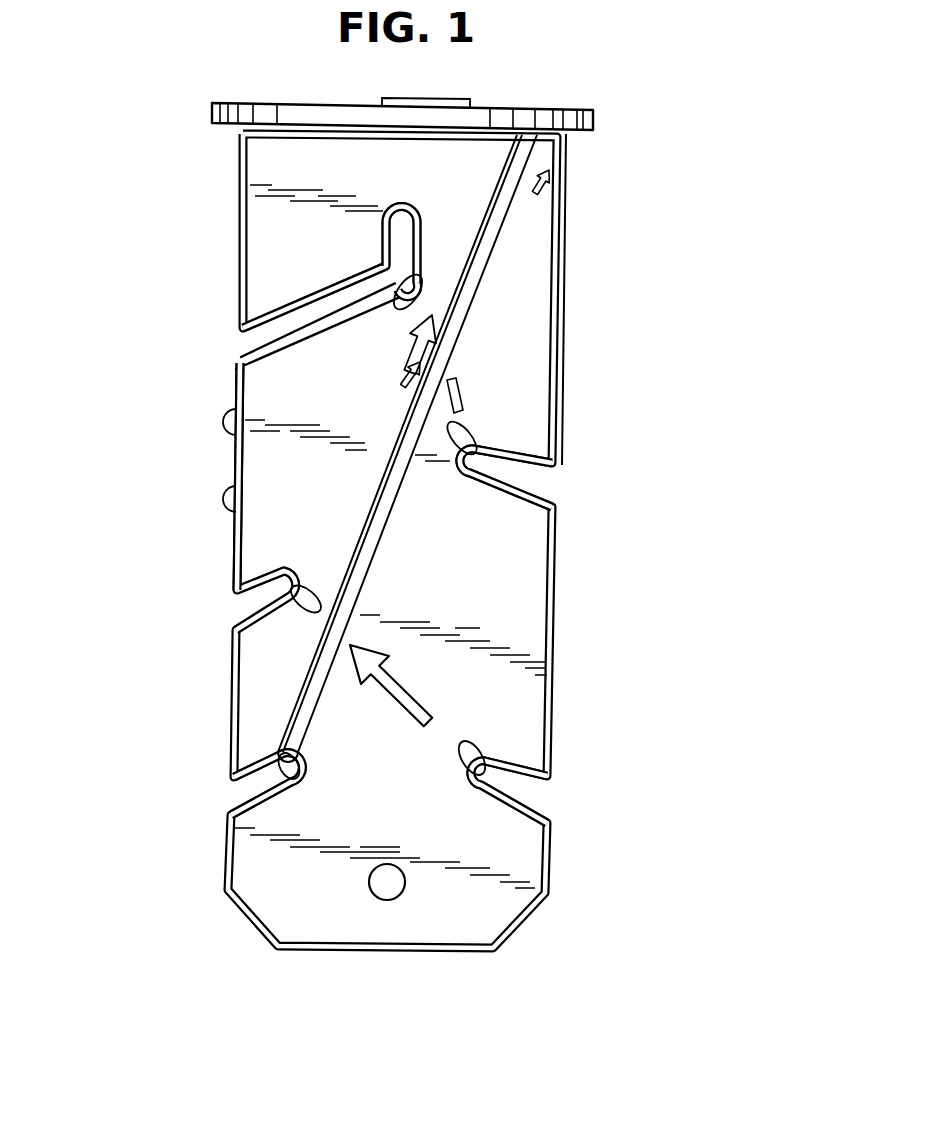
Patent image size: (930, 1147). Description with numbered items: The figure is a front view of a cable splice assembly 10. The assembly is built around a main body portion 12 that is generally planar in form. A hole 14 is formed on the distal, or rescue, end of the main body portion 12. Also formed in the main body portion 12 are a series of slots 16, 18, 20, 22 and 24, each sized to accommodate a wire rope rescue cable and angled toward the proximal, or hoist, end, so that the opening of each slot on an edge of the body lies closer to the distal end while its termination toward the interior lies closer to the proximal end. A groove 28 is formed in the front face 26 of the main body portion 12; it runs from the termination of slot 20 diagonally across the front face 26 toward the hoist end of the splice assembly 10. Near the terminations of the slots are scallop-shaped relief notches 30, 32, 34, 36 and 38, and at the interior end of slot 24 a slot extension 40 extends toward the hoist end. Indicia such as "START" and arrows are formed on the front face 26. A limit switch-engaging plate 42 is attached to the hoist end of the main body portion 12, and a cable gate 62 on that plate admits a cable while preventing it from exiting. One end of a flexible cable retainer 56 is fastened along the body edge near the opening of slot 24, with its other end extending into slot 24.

The cable splice assembly 10 is at (328, 529).
The main body portion 12 is at (230, 553).
The hole 14 is at (383, 902).
The slot 16 is at (533, 490).
The slot 18 is at (520, 806).
The slot 20 is at (250, 804).
The slot 22 is at (245, 608).
The slot 24 is at (250, 338).
The front face 26 is at (268, 253).
The groove 28 is at (450, 345).
The scallop-shaped relief notch 30 is at (477, 430).
The scallop-shaped relief notch 32 is at (477, 757).
The scallop-shaped relief notch 34 is at (288, 752).
The scallop-shaped relief notch 36 is at (310, 587).
The scallop-shaped relief notch 38 is at (424, 290).
The slot extension 40 is at (382, 222).
The limit switch-engaging plate 42 is at (577, 110).
The flexible cable retainer 56 is at (243, 365).
The cable gate 62 is at (465, 107).